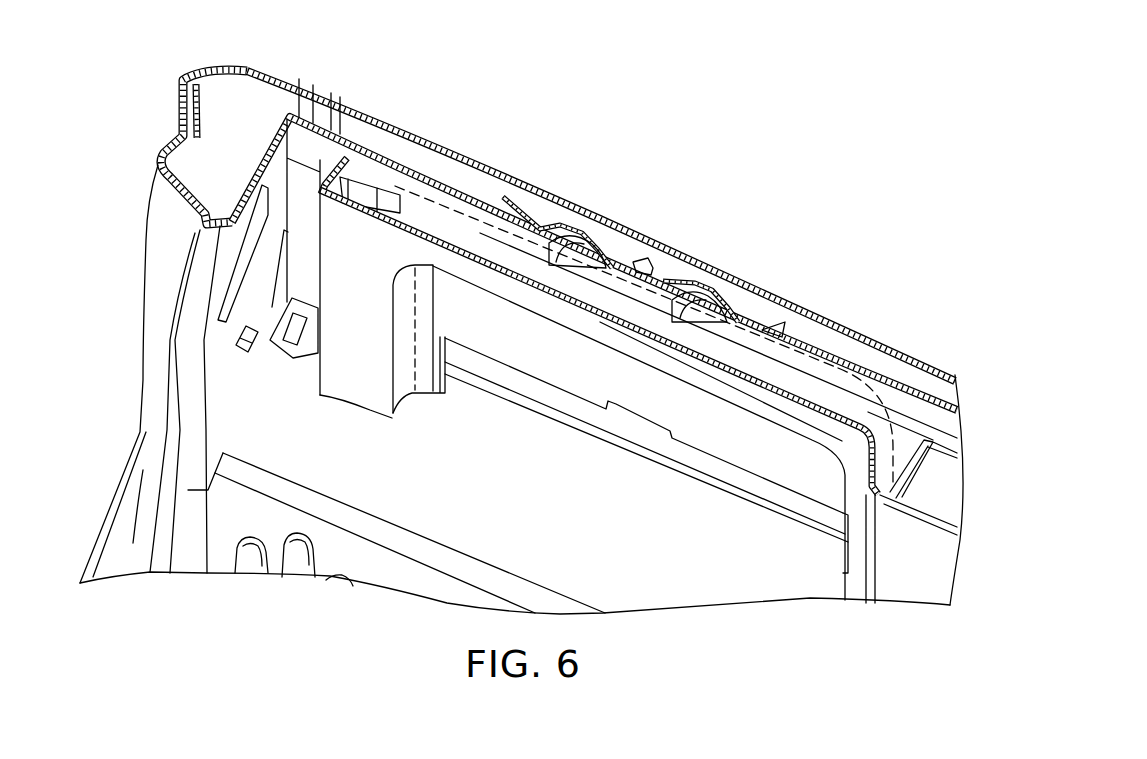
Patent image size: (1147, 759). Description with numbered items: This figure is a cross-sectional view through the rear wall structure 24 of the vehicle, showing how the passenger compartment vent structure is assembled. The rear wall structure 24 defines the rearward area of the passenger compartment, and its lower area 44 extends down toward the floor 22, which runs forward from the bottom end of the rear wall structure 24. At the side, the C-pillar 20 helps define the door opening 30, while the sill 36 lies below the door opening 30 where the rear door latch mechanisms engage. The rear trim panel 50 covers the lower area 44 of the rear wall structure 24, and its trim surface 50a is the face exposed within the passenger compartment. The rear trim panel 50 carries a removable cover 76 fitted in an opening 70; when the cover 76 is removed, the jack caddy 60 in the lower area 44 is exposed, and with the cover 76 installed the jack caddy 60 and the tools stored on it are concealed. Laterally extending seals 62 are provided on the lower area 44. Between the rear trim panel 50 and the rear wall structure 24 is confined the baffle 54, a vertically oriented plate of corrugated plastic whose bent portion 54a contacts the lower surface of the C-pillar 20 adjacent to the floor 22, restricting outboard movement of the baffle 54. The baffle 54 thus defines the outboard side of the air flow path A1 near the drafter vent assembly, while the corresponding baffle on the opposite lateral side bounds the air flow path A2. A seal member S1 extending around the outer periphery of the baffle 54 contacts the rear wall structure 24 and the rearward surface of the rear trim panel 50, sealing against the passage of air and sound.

The C-pillar 20 is at (248, 66).
The floor 22 is at (213, 545).
The rear wall structure 24 is at (660, 240).
The door opening 30 is at (171, 358).
The sill 36 is at (133, 543).
The lower area 44 is at (802, 306).
The rear trim panel 50 is at (360, 365).
The trim surface 50a is at (363, 277).
The baffle 54 is at (323, 165).
The bent portion 54a is at (293, 347).
The jack caddy 60 is at (937, 450).
The laterally extending seal 62 is at (518, 262).
The opening 70 is at (866, 466).
The removable cover 76 is at (903, 555).
The seal member S1 is at (365, 180).
The air flow path A1 is at (890, 448).
The air flow path A2 is at (448, 206).